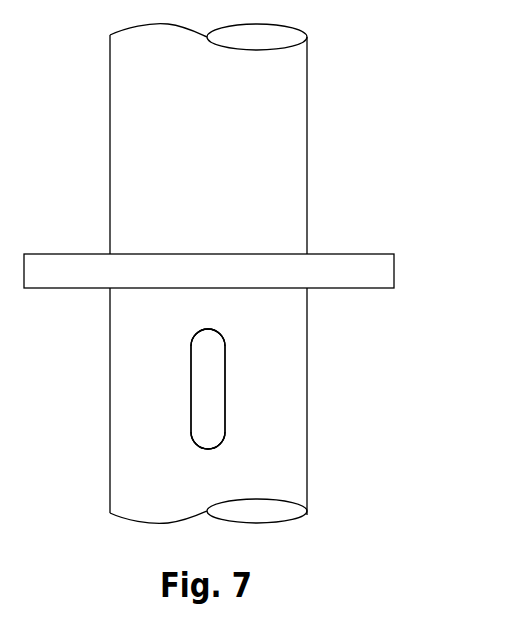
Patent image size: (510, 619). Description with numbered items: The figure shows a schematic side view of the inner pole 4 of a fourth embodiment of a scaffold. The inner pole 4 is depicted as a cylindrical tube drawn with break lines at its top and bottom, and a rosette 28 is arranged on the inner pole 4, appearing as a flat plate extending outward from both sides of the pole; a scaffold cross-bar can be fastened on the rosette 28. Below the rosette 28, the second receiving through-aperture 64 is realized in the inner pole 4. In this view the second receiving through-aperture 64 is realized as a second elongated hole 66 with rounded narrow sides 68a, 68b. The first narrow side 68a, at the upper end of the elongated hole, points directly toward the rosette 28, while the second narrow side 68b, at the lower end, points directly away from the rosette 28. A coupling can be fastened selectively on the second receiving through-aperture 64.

The inner pole 4 is at (270, 118).
The rosette 28 is at (342, 271).
The second receiving through-aperture 64 is at (213, 394).
The second elongated hole 66 is at (208, 389).
The first narrow side 68a is at (207, 320).
The second narrow side 68b is at (207, 459).